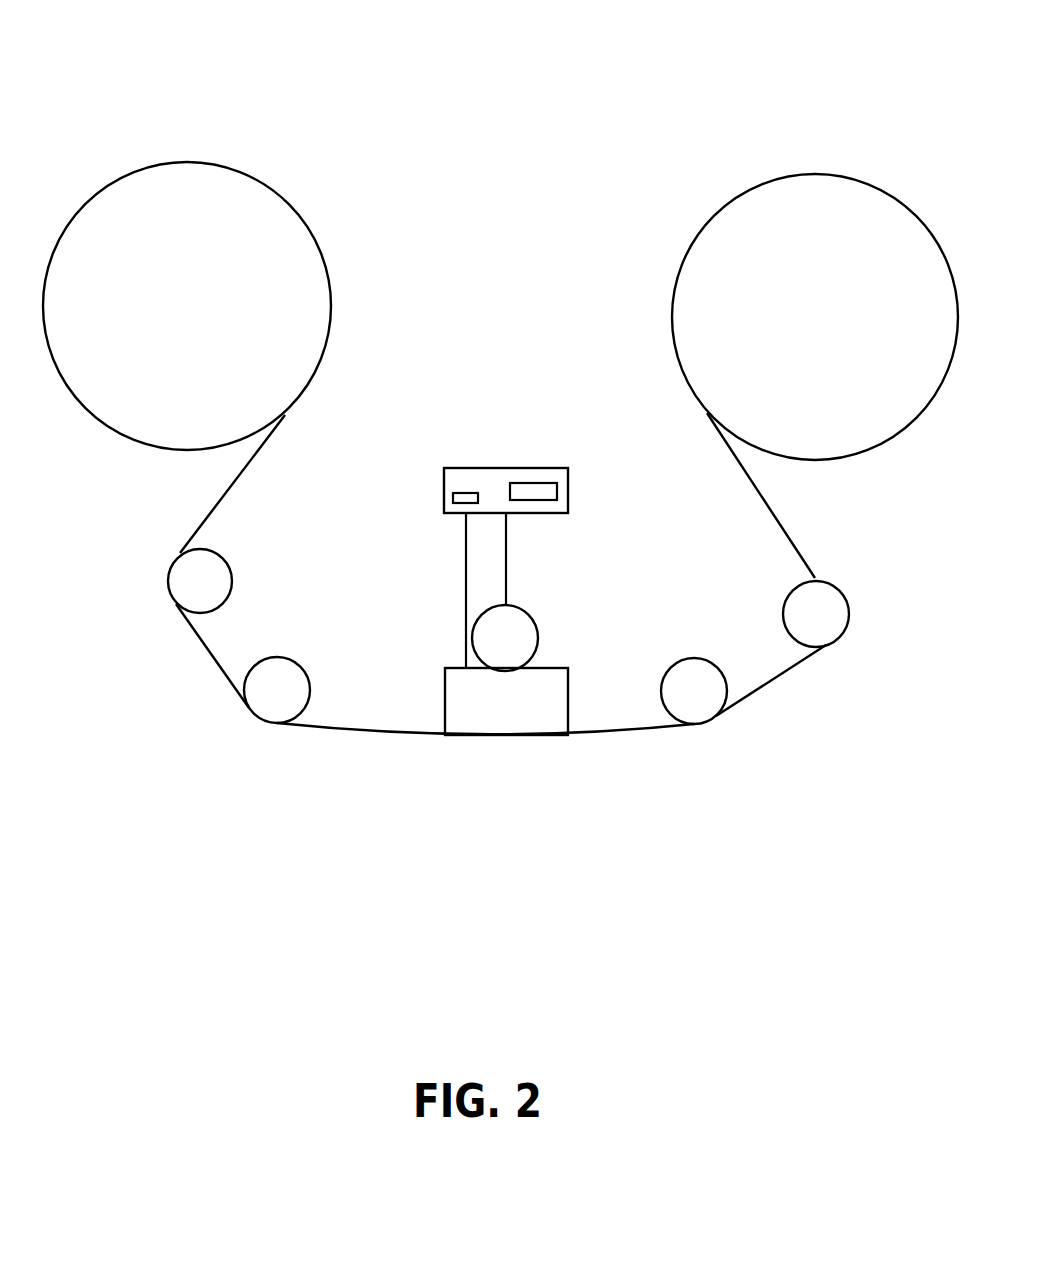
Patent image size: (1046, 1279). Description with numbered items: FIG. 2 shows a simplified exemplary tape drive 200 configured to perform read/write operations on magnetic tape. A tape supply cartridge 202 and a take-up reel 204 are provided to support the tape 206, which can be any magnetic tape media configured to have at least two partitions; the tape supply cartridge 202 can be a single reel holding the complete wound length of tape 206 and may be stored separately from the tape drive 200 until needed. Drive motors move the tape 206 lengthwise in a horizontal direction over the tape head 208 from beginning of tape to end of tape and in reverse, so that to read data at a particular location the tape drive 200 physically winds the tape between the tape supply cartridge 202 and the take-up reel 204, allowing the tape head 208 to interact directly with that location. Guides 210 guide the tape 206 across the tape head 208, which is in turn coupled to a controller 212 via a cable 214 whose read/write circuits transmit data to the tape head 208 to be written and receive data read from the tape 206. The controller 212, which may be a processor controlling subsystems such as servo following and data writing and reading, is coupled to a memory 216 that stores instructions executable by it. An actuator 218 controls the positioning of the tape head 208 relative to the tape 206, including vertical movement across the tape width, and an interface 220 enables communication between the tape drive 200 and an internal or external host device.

The tape drive 200 is at (508, 125).
The tape supply cartridge 202 is at (328, 287).
The take-up reel 204 is at (907, 432).
The tape 206 is at (365, 732).
The tape head 208 is at (568, 702).
The guides 210 is at (277, 657).
The controller 212 is at (503, 468).
The cable 214 is at (466, 635).
The memory 216 is at (467, 493).
The actuator 218 is at (528, 613).
The interface 220 is at (545, 483).